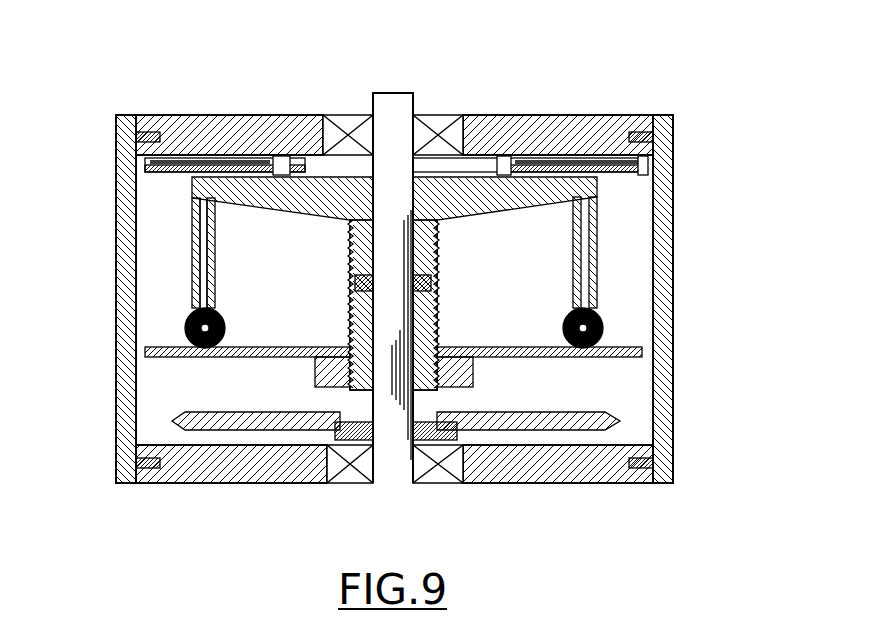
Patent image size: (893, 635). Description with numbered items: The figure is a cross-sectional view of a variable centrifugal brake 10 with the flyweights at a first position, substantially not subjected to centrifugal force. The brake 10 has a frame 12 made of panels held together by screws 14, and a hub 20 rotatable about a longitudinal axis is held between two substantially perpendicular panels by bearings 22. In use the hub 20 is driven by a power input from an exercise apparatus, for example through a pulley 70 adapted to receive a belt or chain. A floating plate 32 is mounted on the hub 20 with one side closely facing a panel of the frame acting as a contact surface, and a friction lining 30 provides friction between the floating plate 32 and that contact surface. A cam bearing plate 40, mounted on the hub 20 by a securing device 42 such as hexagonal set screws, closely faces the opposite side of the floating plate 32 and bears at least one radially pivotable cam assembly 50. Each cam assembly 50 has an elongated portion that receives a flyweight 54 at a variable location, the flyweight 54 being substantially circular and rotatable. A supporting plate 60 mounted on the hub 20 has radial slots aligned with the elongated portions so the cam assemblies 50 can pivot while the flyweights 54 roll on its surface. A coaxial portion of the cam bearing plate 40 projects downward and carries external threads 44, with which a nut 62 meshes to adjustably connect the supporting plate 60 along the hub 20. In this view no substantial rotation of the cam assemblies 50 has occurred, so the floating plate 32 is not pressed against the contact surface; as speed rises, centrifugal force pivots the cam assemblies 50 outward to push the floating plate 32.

The variable centrifugal brake 10 is at (188, 57).
The frame 12 is at (557, 117).
The screws 14 is at (116, 126).
The hub 20 is at (385, 100).
The bearings 22 is at (437, 115).
The friction lining 30 is at (673, 150).
The floating plate 32 is at (673, 178).
The cam bearing plate 40 is at (465, 217).
The securing device 42 is at (345, 292).
The external threads 44 is at (350, 233).
The cam assembly 50 is at (600, 233).
The flyweight 54 is at (603, 325).
The supporting plate 60 is at (178, 358).
The nut 62 is at (470, 387).
The pulley 70 is at (172, 421).